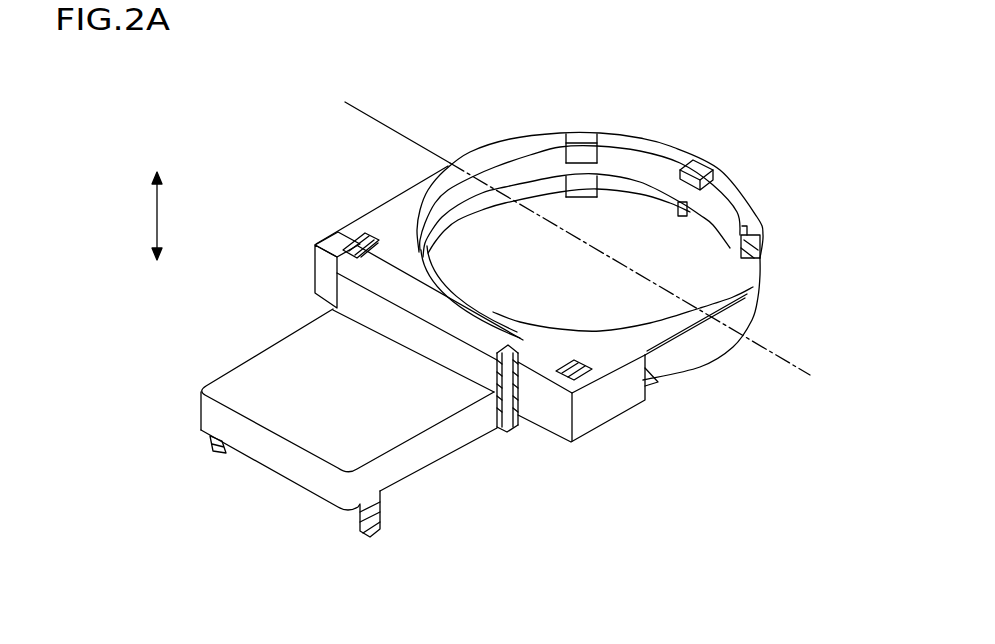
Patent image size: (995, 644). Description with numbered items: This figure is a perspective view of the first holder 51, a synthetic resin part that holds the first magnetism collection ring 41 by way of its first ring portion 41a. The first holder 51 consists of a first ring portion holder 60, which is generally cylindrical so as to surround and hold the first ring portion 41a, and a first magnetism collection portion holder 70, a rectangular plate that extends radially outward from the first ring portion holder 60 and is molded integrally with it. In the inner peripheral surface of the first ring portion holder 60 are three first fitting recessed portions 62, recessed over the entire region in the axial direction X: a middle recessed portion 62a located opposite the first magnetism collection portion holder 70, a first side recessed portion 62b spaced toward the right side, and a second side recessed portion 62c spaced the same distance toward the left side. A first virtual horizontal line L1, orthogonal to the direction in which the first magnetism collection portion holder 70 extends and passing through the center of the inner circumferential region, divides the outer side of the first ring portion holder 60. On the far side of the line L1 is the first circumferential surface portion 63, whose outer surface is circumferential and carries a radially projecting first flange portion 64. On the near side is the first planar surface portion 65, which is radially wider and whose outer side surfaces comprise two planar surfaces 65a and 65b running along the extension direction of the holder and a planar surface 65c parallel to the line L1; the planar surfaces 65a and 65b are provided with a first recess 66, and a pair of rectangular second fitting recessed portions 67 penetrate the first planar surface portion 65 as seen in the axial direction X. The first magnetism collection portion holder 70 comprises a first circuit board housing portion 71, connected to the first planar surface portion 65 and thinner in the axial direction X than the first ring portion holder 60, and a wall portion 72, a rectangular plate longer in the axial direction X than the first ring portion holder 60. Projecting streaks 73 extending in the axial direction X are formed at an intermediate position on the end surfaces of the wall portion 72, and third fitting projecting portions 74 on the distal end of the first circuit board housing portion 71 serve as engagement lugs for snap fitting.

The first virtual horizontal line L1 is at (386, 120).
The axial direction X is at (166, 216).
The first magnetism collection ring 41 is at (471, 203).
The first ring portion 41a is at (559, 221).
The first holder 51 is at (598, 556).
The first ring portion holder 60 is at (584, 488).
The first fitting recessed portions 62 is at (812, 80).
The middle recessed portion 62a is at (694, 158).
The first side recessed portion 62b is at (766, 216).
The second side recessed portion 62c is at (588, 136).
The first circumferential surface portion 63 is at (745, 302).
The first flange portion 64 is at (770, 213).
The first planar surface portion 65 is at (325, 248).
The planar surface 65a is at (610, 405).
The planar surface 65b is at (337, 233).
The planar surface 65c is at (320, 275).
The first recess 66 is at (655, 386).
The second fitting recessed portions 67 is at (353, 232).
The first magnetism collection portion holder 70 is at (472, 498).
The first circuit board housing portion 71 is at (236, 376).
The wall portion 72 is at (372, 315).
The projecting streaks 73 is at (508, 432).
The third fitting projecting portions 74 is at (214, 453).